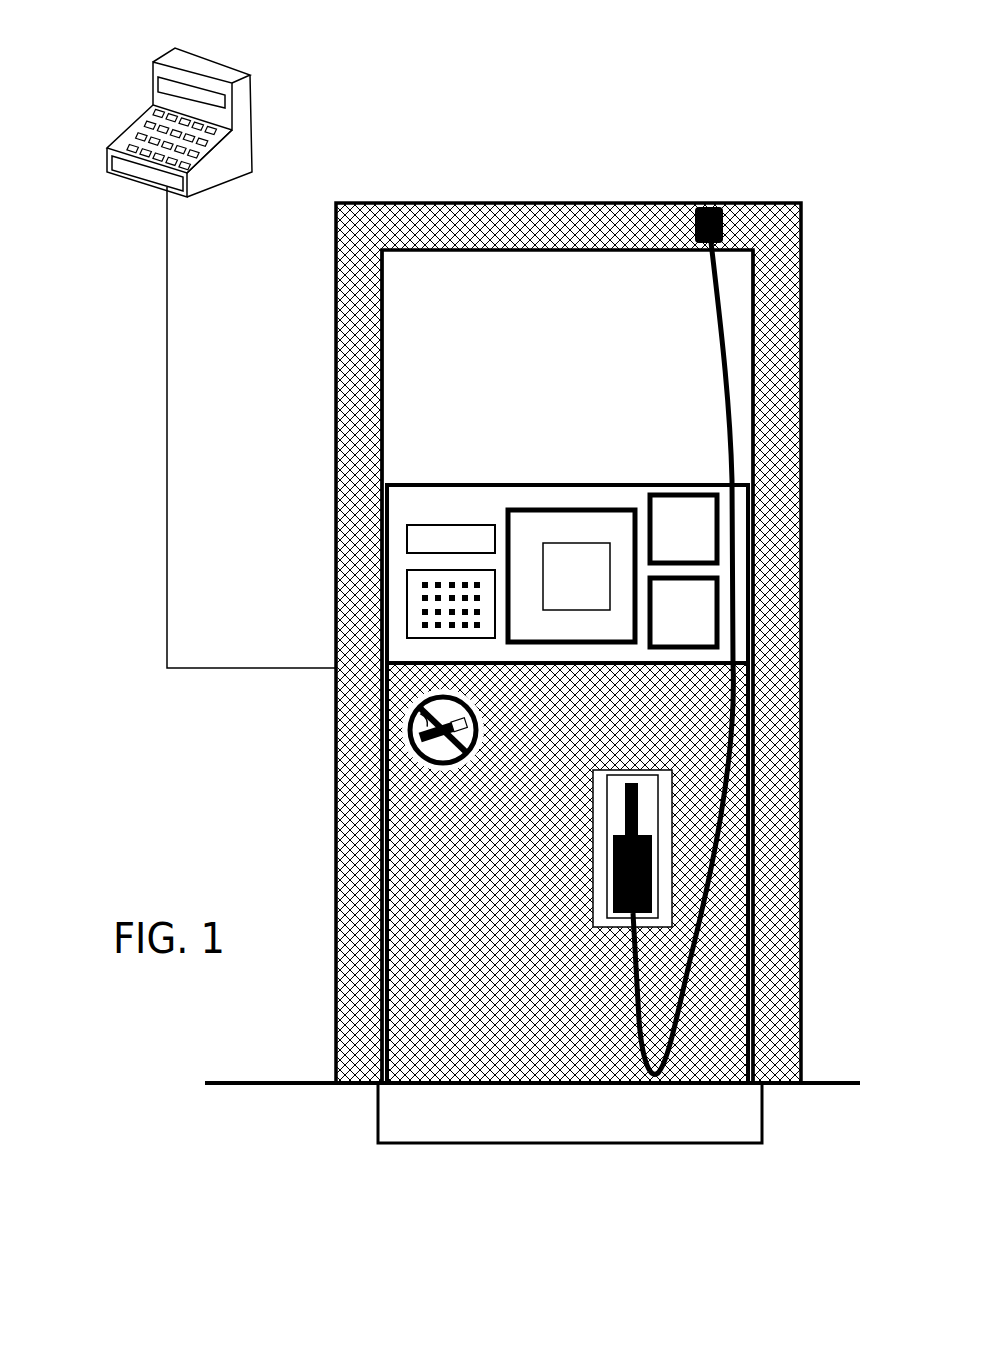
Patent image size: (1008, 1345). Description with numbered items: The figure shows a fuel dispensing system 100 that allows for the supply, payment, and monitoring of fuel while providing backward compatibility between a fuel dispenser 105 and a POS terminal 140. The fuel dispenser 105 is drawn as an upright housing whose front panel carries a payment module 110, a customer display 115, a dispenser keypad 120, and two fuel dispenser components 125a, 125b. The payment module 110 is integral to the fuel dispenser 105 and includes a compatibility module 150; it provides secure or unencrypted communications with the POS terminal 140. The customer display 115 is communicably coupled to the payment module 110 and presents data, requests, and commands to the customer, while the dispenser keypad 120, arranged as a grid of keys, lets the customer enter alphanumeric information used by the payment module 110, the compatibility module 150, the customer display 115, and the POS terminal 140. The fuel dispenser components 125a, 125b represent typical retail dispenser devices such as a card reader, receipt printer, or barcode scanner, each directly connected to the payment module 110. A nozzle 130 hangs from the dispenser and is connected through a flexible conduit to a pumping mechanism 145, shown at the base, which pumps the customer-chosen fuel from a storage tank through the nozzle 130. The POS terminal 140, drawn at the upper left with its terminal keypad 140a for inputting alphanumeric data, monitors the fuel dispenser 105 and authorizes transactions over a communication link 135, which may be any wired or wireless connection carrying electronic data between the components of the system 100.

The fuel dispensing system 100 is at (672, 72).
The fuel dispenser 105 is at (540, 203).
The payment module 110 is at (571, 519).
The customer display 115 is at (422, 525).
The dispenser keypad 120 is at (407, 590).
The fuel dispenser component 125a is at (662, 495).
The fuel dispenser component 125b is at (717, 595).
The nozzle 130 is at (640, 838).
The communication link 135 is at (170, 547).
The POS terminal 140 is at (192, 108).
The terminal keypad 140a is at (152, 128).
The pumping mechanism 145 is at (548, 1128).
The compatibility module 150 is at (557, 590).